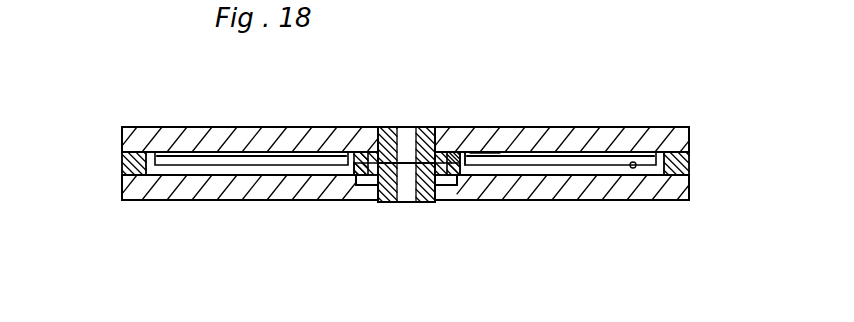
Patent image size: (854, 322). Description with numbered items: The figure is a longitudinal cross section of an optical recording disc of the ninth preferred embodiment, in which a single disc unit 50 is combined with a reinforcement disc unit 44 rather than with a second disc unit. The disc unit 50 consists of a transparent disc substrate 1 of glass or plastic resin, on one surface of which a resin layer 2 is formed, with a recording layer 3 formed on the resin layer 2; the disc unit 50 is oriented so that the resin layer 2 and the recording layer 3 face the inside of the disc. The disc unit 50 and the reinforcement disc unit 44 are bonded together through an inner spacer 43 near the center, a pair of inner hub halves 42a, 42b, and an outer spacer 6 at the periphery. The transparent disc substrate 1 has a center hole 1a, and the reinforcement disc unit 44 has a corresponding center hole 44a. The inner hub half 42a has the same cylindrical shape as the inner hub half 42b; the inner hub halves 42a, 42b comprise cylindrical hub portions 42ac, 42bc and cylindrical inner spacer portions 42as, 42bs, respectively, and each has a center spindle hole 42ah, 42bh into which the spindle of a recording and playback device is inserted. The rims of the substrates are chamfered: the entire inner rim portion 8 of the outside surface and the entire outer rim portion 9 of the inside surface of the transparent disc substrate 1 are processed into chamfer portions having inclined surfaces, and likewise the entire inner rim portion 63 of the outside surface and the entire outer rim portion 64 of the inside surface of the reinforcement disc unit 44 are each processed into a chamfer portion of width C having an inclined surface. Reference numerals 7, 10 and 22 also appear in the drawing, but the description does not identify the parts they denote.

The transparent disc substrate 1 is at (245, 140).
The center hole 1a is at (462, 152).
The resin layer 2 is at (558, 148).
The recording layer 3 is at (639, 162).
The outer spacer 6 is at (122, 162).
The upper flange portion 7 is at (368, 147).
The inner rim portion 8 is at (380, 150).
The outer rim portion 9 is at (122, 148).
The upper surface of plate 10 is at (122, 127).
The cell layer 22 is at (528, 155).
The inner hub half 42a is at (392, 140).
The center spindle hole 42ah is at (407, 138).
The cylindrical hub portion 42ac is at (425, 148).
The cylindrical inner spacer portion 42as is at (487, 152).
The inner hub half 42b is at (385, 185).
The center spindle hole 42bh is at (406, 183).
The cylindrical hub portion 42bc is at (425, 185).
The cylindrical inner spacer portion 42bs is at (368, 170).
The inner spacer 43 is at (360, 152).
The reinforcement disc unit 44 is at (213, 195).
The center hole 44a is at (372, 188).
The disc unit 50 is at (222, 126).
The inner rim portion 63 is at (366, 178).
The outer rim portion 64 is at (122, 175).